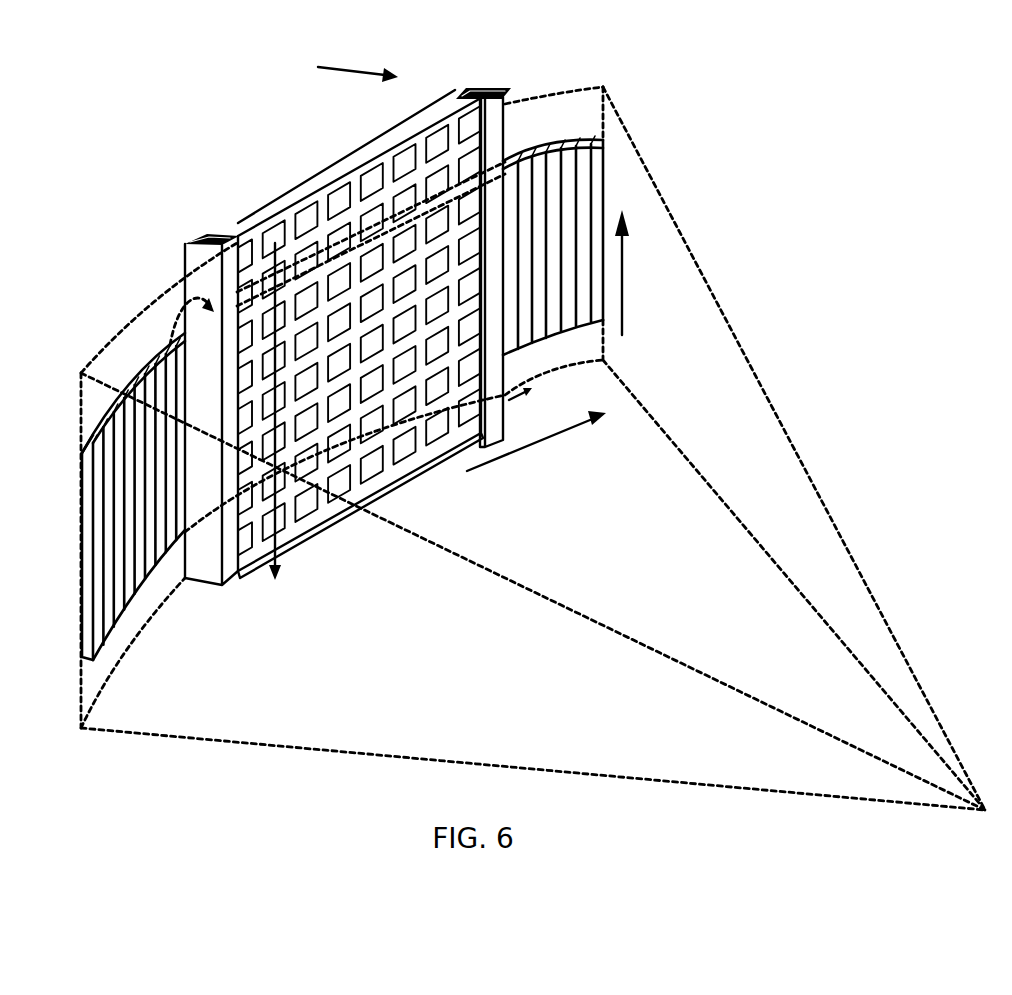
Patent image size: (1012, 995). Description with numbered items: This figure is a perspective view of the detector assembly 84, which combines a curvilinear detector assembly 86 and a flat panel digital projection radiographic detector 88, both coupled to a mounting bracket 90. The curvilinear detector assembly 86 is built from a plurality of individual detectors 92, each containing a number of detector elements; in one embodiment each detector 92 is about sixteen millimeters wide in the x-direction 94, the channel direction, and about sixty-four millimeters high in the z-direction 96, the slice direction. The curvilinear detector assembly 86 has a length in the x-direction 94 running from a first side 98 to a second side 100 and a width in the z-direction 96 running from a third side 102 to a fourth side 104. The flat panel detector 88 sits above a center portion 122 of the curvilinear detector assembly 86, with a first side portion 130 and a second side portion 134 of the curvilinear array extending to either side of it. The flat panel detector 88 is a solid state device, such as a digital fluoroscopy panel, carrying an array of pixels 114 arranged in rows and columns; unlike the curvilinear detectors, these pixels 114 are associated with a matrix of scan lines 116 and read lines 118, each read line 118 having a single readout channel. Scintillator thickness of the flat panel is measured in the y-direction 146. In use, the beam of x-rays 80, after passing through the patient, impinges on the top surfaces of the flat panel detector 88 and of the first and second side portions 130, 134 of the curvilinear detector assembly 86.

The beam of x-rays 80 is at (794, 448).
The detector assembly 84 is at (65, 187).
The curvilinear detector assembly 86 is at (519, 421).
The flat panel digital projection radiographic detector 88 is at (360, 347).
The mounting bracket 90 is at (188, 258).
The individual detectors 92 is at (346, 388).
The x-direction 94 is at (498, 455).
The z-direction 96 is at (624, 250).
The first side 98 is at (90, 515).
The second side 100 is at (608, 197).
The third side 102 is at (112, 638).
The fourth side 104 is at (132, 393).
The pixels 114 is at (375, 183).
The scan lines 116 is at (513, 401).
The read lines 118 is at (275, 424).
The center portion 122 is at (175, 321).
The first side portion 130 is at (526, 134).
The second side portion 134 is at (133, 387).
The y-direction 146 is at (358, 60).